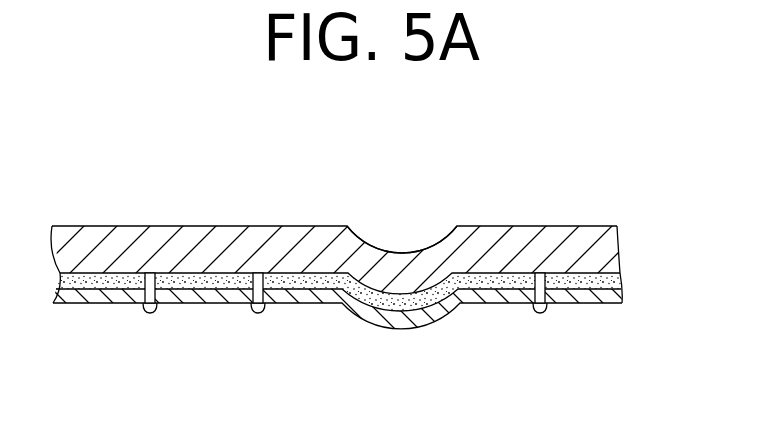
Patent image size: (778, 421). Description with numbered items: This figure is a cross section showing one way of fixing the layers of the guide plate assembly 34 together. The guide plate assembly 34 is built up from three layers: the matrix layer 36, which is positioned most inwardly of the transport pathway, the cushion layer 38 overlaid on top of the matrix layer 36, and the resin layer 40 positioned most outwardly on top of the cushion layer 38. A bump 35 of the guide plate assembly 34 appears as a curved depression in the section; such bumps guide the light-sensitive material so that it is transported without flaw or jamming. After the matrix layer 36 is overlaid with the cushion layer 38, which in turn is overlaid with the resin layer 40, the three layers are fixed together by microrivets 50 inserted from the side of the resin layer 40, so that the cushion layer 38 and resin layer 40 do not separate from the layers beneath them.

The guide plate assembly 34 is at (510, 200).
The bumps 35 is at (396, 229).
The matrix layer 36 is at (622, 295).
The cushion layer 38 is at (620, 287).
The resin layer 40 is at (602, 247).
The microrivets 50 is at (144, 312).